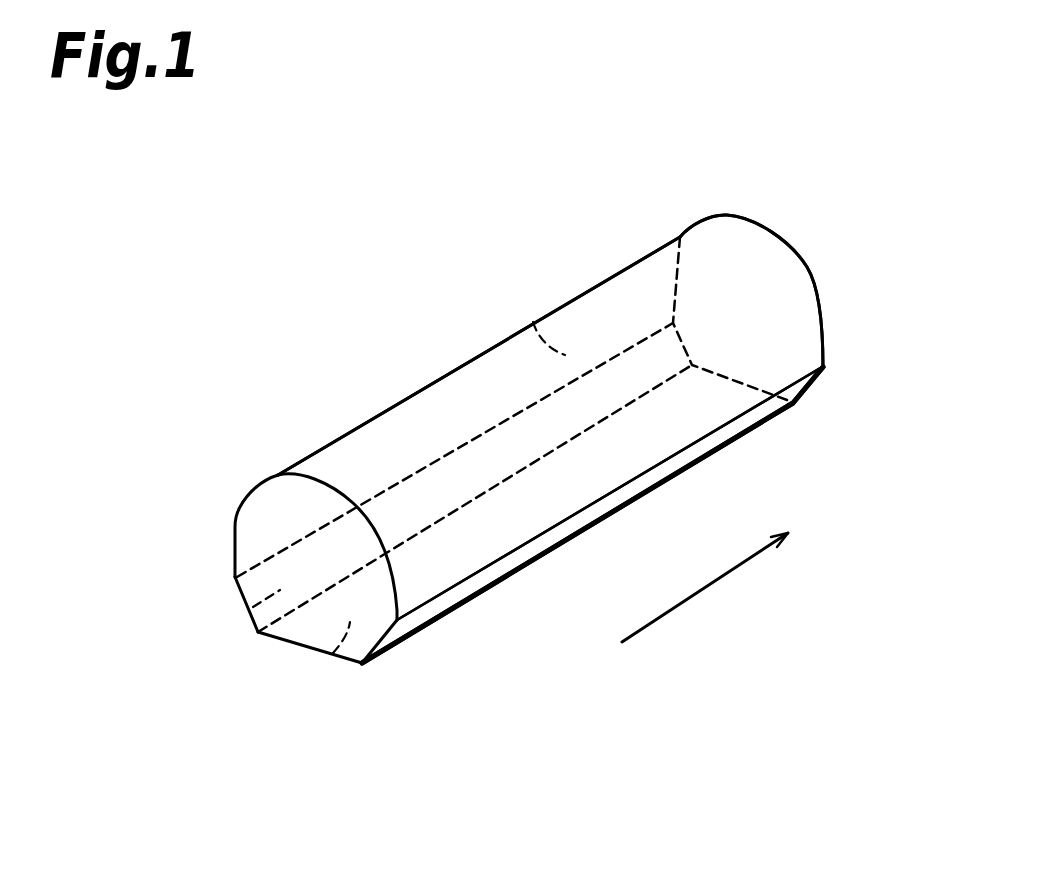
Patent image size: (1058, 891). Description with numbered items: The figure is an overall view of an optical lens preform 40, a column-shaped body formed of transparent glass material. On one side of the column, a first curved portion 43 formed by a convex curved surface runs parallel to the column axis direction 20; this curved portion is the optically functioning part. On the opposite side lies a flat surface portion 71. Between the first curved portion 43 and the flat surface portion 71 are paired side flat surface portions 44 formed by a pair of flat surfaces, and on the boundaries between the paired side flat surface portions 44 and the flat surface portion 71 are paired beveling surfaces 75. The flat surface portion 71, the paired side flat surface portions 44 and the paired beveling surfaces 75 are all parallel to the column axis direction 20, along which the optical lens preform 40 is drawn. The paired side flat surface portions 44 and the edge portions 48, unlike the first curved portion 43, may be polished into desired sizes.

The optical lens preform 40 is at (837, 230).
The first curved portion 43 is at (442, 413).
The paired side flat surface portions 44 is at (533, 322).
The edge portions 48 is at (263, 518).
The paired beveling surfaces 75 is at (247, 603).
The flat surface portion 71 is at (330, 653).
The column axis direction 20 is at (693, 592).